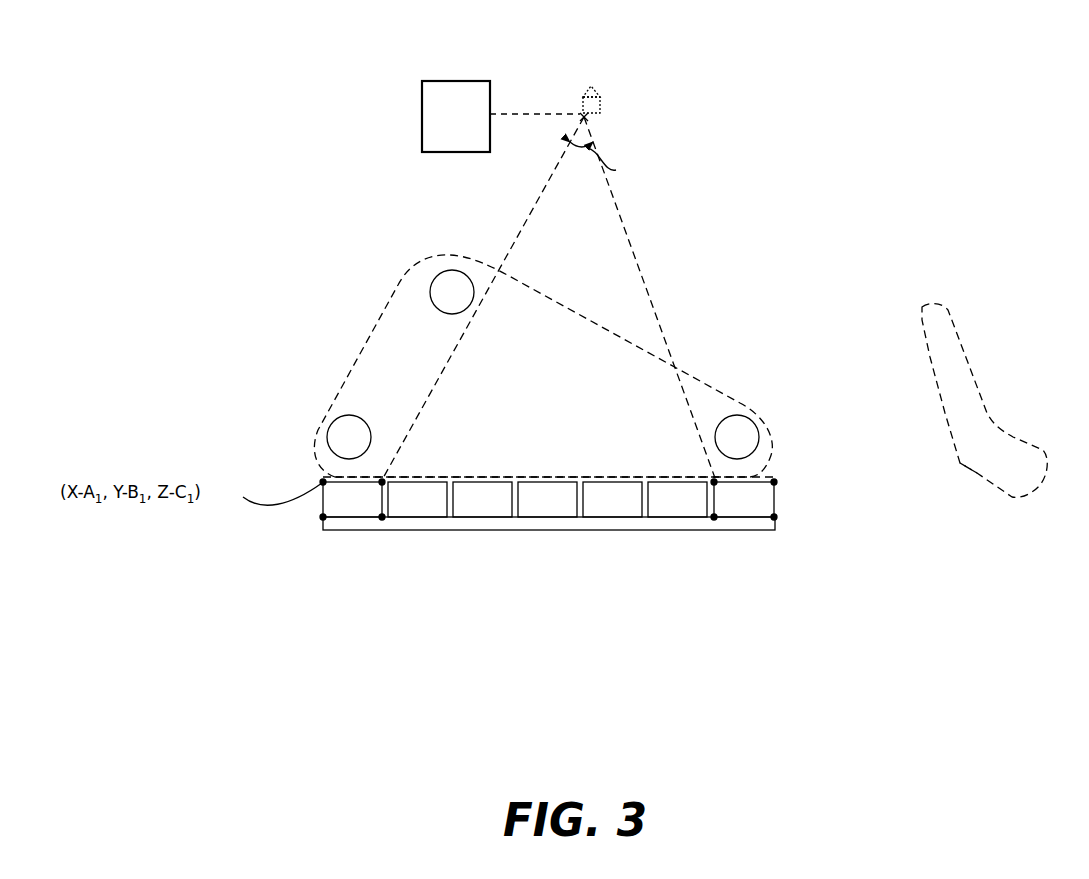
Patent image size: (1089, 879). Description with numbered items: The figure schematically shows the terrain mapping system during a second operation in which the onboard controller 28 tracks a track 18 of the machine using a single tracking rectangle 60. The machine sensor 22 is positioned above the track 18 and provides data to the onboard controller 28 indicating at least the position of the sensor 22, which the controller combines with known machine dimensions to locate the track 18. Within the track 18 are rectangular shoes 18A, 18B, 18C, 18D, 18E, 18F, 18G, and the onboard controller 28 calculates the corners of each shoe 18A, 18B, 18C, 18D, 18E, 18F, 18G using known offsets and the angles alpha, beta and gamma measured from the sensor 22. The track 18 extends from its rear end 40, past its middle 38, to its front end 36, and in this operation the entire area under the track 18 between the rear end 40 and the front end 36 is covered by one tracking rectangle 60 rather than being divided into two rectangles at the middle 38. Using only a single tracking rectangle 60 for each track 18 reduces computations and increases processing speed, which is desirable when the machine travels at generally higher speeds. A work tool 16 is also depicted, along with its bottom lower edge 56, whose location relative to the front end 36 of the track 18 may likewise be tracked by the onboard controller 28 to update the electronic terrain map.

The work tool 16 is at (970, 368).
The tracks 18 is at (594, 465).
The shoe 18A is at (352, 499).
The shoe 18B is at (417, 499).
The shoe 18C is at (482, 499).
The shoe 18D is at (547, 499).
The shoe 18E is at (612, 499).
The shoe 18F is at (677, 499).
The shoe 18G is at (744, 499).
The machine sensor 22 is at (590, 88).
The onboard controller 28 is at (444, 130).
The front end of track 36 is at (766, 466).
The middle of track 38 is at (546, 476).
The rear end of track 40 is at (333, 471).
The bottom lower edge of work tool 56 is at (963, 470).
The single tracking rectangle 60 is at (567, 531).